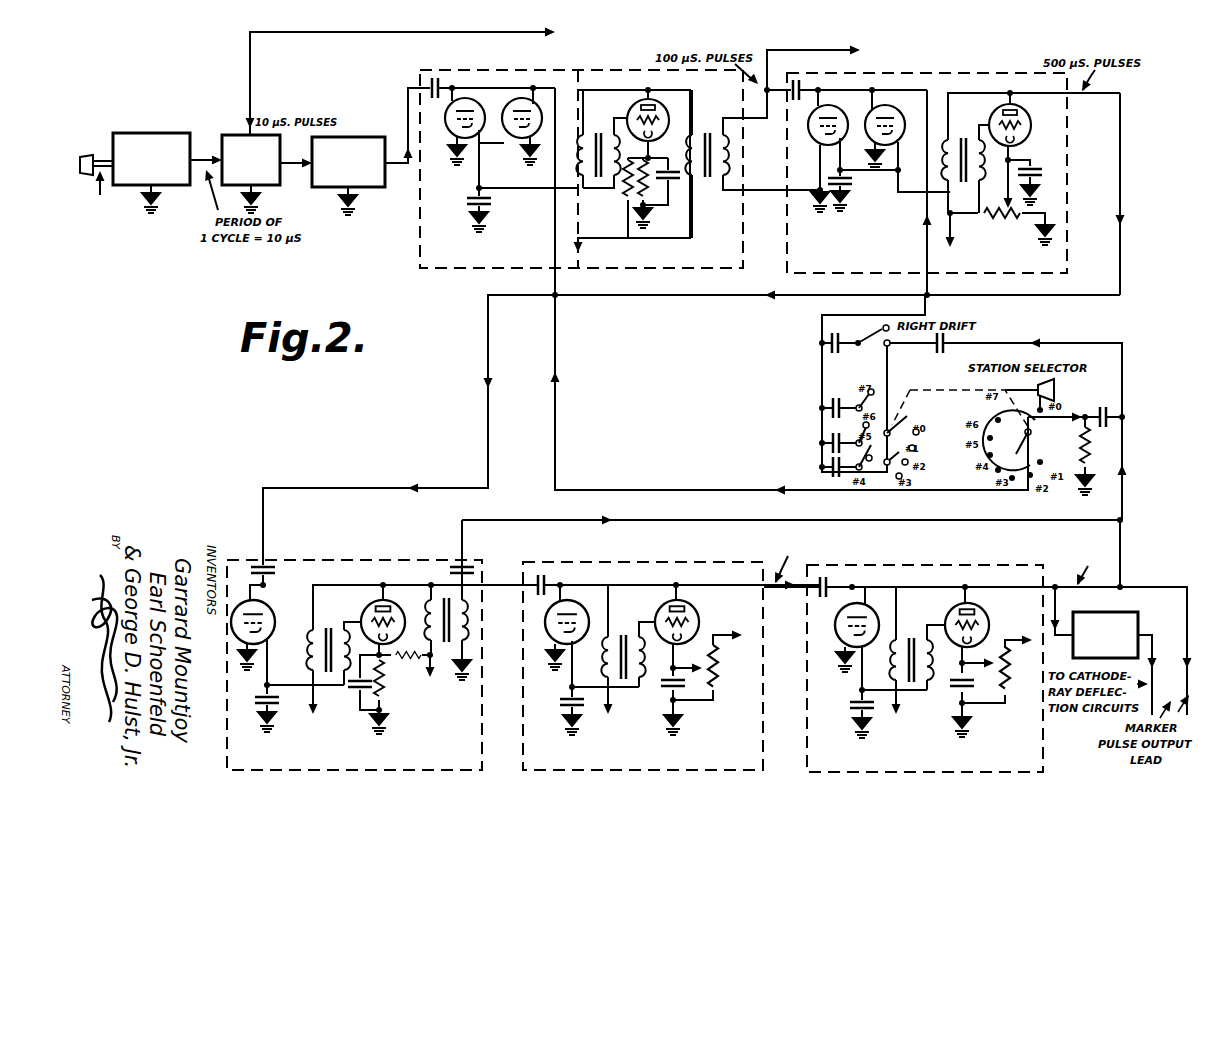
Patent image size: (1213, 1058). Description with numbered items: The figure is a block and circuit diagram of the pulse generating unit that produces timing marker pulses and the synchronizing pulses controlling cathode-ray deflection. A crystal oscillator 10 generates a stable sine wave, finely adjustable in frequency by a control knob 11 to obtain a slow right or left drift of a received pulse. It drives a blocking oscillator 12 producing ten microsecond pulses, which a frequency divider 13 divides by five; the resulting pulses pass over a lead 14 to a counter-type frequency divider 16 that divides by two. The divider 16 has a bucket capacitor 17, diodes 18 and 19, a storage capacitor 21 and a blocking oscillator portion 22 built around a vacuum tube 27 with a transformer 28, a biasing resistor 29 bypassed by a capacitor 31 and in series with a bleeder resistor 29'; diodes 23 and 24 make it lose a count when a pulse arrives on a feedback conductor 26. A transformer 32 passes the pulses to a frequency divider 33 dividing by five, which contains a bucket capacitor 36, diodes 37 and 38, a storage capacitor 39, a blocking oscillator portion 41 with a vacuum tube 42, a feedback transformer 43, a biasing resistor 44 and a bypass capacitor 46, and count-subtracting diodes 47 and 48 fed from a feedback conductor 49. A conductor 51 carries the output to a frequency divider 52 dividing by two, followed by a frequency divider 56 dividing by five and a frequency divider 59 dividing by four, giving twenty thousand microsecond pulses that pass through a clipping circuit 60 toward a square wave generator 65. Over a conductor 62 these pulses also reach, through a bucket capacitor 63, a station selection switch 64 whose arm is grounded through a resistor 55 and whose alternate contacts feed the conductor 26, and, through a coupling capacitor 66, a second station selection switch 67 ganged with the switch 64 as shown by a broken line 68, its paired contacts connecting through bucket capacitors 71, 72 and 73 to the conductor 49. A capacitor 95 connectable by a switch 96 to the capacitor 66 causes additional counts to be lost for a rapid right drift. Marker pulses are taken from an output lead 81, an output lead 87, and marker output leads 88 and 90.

The crystal oscillator 10 is at (150, 131).
The control knob 11 is at (90, 158).
The blocking oscillator 12 is at (233, 134).
The frequency divider 13 is at (314, 186).
The lead 14 is at (404, 93).
The frequency divider 16 is at (420, 208).
The bucket capacitor 17 is at (435, 77).
The diode 18 is at (450, 130).
The diode 19 is at (481, 106).
The storage capacitor 21 is at (468, 207).
The blocking oscillator portion 22 is at (632, 171).
The diode 23 is at (514, 134).
The diode 24 is at (540, 108).
The feedback conductor 26 is at (557, 341).
The vacuum tube 27 is at (668, 112).
The transformer 28 is at (610, 198).
The biasing resistor 29 is at (639, 209).
The bleeder resistor 29' is at (613, 198).
The capacitor 31 is at (674, 206).
The transformer 32 is at (718, 186).
The frequency divider 33 is at (787, 270).
The bucket capacitor 36 is at (825, 80).
The diode 37 is at (815, 138).
The diode 38 is at (844, 112).
The storage capacitor 39 is at (848, 197).
The blocking oscillator portion 41 is at (1030, 153).
The vacuum tube 42 is at (1024, 118).
The feedback transformer 43 is at (970, 214).
The biasing resistor 44 is at (1002, 231).
The bypass capacitor 46 is at (1034, 160).
The diode 47 is at (870, 138).
The diode 48 is at (904, 118).
The feedback conductor 49 is at (924, 218).
The conductor 51 is at (710, 298).
The frequency divider 52 is at (330, 558).
The resistor 55 is at (1094, 474).
The frequency divider 56 is at (546, 562).
The frequency divider 59 is at (807, 632).
The clipping circuit 60 is at (1107, 610).
The conductor 62 is at (1122, 548).
The bucket capacitor 63 is at (1113, 412).
The station selection switch 64 is at (1030, 450).
The square wave generator 65 is at (1057, 387).
The coupling capacitor 66 is at (1008, 426).
The station selection switch 67 is at (888, 432).
The broken line 68 is at (961, 408).
The bucket capacitor 71 is at (822, 465).
The bucket capacitor 72 is at (822, 438).
The bucket capacitor 73 is at (822, 403).
The output lead 81 is at (388, 32).
The output lead 87 is at (828, 48).
The marker output lead 88 is at (535, 520).
The marker output lead 90 is at (1168, 578).
The capacitor 95 is at (822, 343).
The switch 96 is at (856, 350).